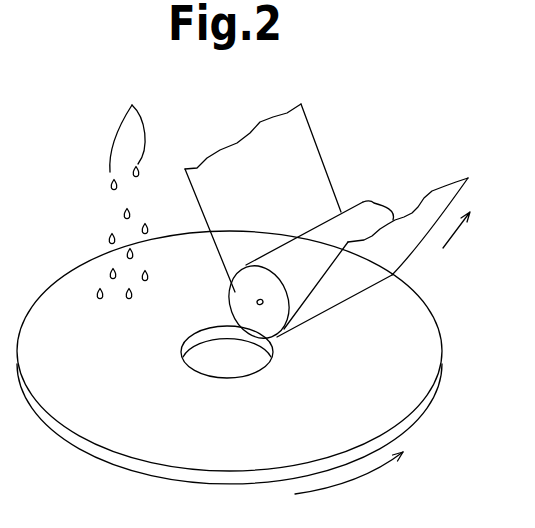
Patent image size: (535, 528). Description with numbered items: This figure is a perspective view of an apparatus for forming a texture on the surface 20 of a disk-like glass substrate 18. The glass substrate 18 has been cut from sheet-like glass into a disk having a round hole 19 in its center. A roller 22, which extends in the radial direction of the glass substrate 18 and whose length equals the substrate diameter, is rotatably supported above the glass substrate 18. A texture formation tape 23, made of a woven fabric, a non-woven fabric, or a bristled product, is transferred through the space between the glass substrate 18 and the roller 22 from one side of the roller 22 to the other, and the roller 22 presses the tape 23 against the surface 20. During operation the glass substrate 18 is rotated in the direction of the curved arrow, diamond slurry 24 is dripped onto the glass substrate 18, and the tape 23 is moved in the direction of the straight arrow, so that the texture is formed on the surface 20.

The glass substrate 18 is at (433, 342).
The round hole 19 is at (200, 340).
The surface 20 is at (413, 296).
The roller 22 is at (370, 203).
The texture formation tape 23 is at (307, 143).
The diamond slurry 24 is at (122, 186).